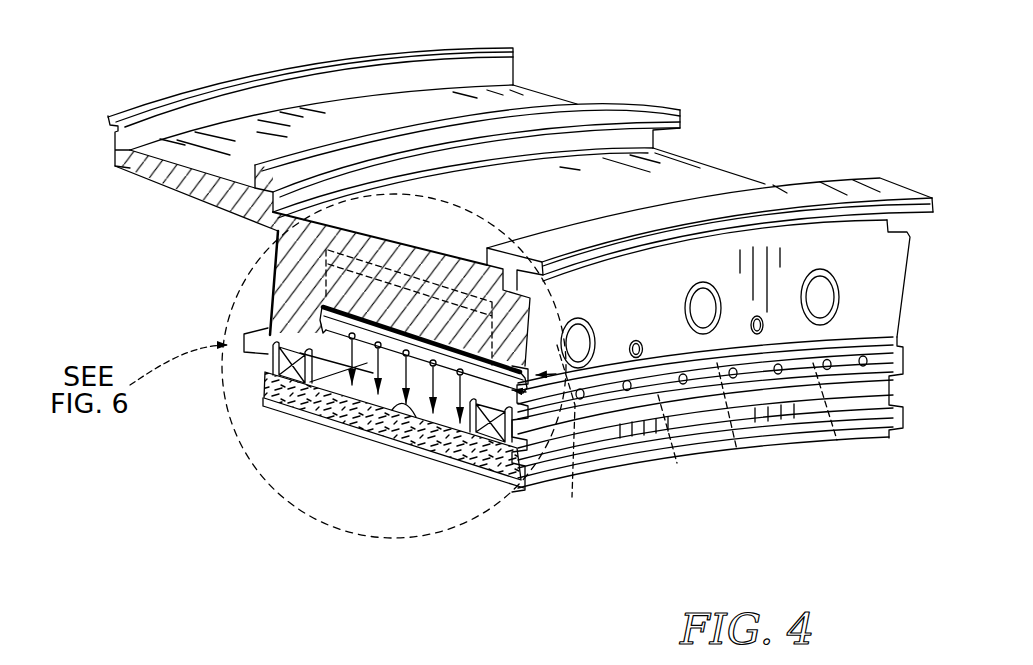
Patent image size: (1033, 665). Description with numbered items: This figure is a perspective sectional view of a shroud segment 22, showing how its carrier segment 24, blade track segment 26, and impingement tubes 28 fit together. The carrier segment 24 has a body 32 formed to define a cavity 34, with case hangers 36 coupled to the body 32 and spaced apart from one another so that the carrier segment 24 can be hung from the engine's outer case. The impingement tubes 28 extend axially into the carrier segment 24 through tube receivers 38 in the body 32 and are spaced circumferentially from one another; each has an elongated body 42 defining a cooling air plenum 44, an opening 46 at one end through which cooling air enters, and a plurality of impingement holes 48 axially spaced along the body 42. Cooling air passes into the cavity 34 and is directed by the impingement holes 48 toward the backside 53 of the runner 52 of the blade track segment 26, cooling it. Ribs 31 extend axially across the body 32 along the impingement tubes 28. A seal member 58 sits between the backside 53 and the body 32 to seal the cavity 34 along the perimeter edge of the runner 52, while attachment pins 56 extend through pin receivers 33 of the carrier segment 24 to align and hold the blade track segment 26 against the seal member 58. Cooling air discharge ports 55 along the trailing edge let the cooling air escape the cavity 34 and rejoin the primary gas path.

The shroud segment 22 is at (787, 72).
The carrier segment 24 is at (685, 174).
The blade track segment 26 is at (753, 427).
The impingement tube 28 is at (548, 378).
The rib 31 is at (360, 292).
The body 32 is at (296, 287).
The pin receiver 33 is at (596, 326).
The cavity 34 is at (349, 365).
The case hanger 36 is at (641, 104).
The tube receiver 38 is at (513, 378).
The elongated body 42 is at (435, 326).
The cooling air plenum 44 is at (366, 322).
The opening 46 is at (526, 392).
The impingement hole 48 is at (376, 352).
The runner 52 is at (687, 433).
The backside 53 is at (392, 405).
The cooling air discharge port 55 is at (707, 421).
The attachment pin 56 is at (818, 297).
The seal member 58 is at (285, 362).